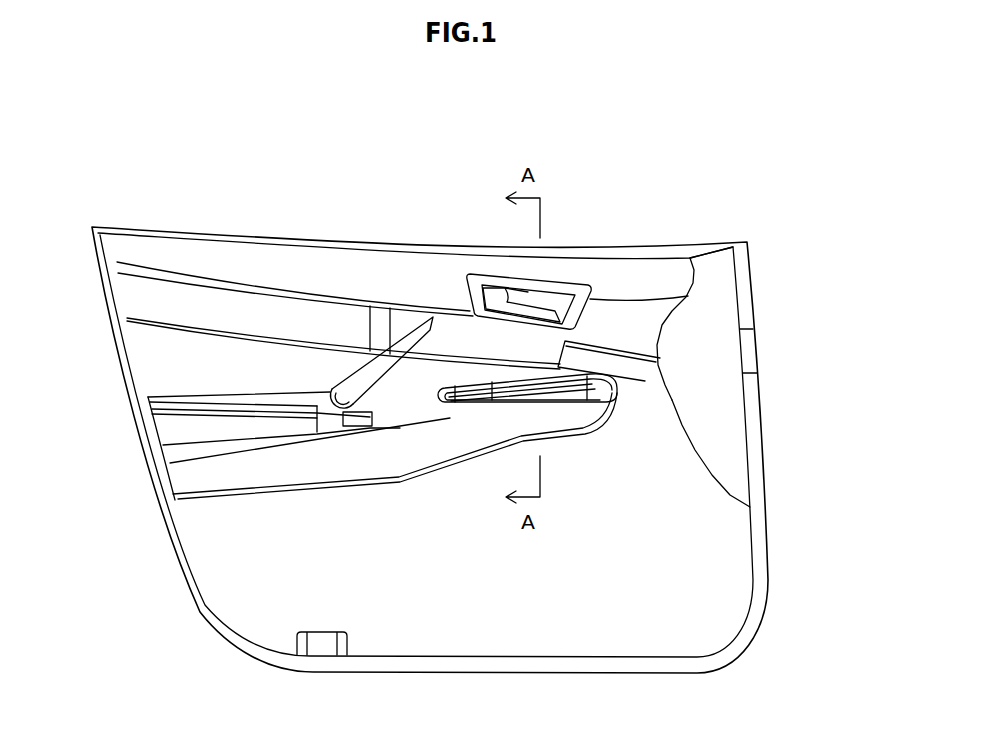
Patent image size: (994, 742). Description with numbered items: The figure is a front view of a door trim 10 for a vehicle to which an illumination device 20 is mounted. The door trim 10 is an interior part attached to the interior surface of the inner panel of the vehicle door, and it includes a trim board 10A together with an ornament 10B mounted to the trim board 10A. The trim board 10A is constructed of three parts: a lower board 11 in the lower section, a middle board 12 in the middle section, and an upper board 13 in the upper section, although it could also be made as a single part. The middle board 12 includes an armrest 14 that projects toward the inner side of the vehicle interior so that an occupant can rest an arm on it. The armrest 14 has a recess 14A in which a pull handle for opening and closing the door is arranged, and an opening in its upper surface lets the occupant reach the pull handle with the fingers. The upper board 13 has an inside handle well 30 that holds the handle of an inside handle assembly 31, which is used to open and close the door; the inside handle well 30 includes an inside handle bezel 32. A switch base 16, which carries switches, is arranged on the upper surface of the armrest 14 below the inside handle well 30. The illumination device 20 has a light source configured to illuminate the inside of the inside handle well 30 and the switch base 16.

The door trim 10 is at (732, 222).
The trim board 10A is at (502, 393).
The ornament 10B is at (147, 292).
The lower board 11 is at (722, 542).
The middle board 12 is at (662, 358).
The upper board 13 is at (228, 252).
The armrest 14 is at (183, 435).
The recess 14A is at (334, 389).
The switch base 16 is at (493, 373).
The illumination device 20 is at (563, 238).
The inside handle well 30 is at (573, 278).
The inside handle assembly 31 is at (497, 373).
The inside handle bezel 32 is at (690, 296).